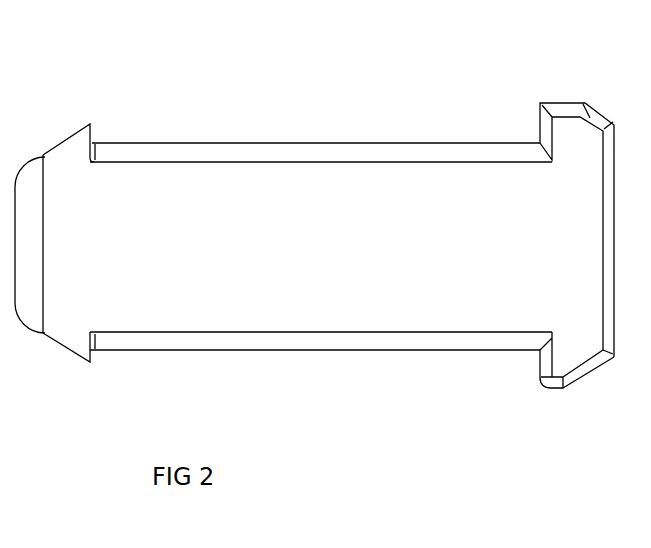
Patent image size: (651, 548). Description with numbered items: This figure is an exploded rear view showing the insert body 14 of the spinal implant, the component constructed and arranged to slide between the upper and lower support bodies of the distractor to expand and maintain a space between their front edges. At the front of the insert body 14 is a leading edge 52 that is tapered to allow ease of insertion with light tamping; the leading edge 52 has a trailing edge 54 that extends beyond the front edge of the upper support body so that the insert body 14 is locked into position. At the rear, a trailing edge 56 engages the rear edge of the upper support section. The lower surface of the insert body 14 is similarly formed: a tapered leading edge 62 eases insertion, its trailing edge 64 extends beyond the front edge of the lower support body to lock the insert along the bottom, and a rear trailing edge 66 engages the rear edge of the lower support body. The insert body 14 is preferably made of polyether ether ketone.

The insert body 14 is at (328, 363).
The leading edge 52 is at (43, 157).
The trailing edge 54 is at (90, 124).
The trailing edge 56 is at (547, 110).
The leading edge 62 is at (70, 358).
The trailing edge 64 is at (92, 357).
The rear trailing edge 66 is at (538, 380).